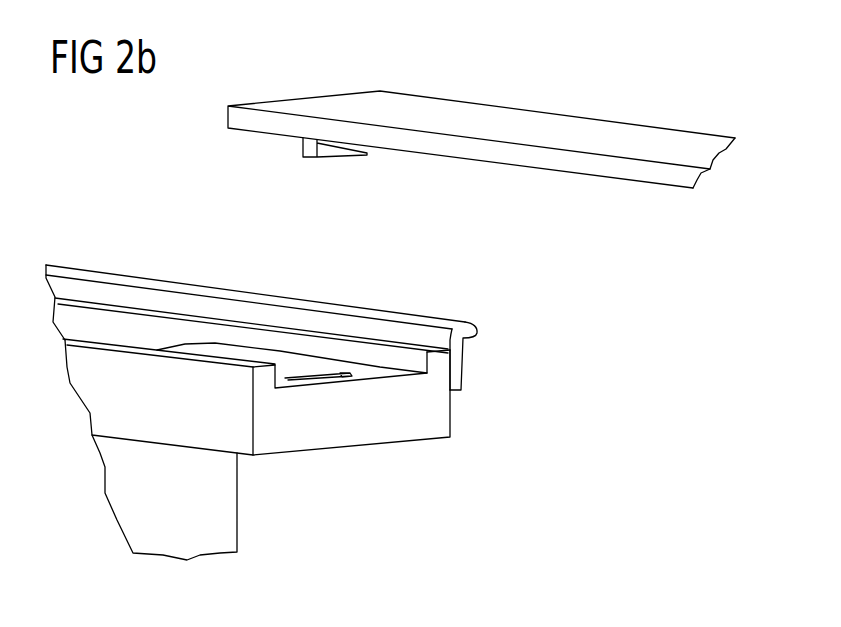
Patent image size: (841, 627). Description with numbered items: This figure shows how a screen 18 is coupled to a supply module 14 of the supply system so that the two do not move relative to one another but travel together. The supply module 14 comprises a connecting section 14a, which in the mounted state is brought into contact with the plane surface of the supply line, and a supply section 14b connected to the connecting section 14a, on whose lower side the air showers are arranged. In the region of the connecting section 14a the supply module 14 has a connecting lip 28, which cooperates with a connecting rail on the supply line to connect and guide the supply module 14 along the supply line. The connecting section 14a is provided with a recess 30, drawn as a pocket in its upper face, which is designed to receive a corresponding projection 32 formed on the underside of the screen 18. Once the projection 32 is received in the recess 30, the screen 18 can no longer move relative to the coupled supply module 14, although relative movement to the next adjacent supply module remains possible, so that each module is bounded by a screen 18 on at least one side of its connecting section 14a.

The screen 18 is at (483, 150).
The projection 32 is at (327, 150).
The connecting lip 28 is at (453, 360).
The recess 30 is at (318, 373).
The supply module 14 is at (291, 405).
The connecting section 14a is at (433, 413).
The supply section 14b is at (232, 515).